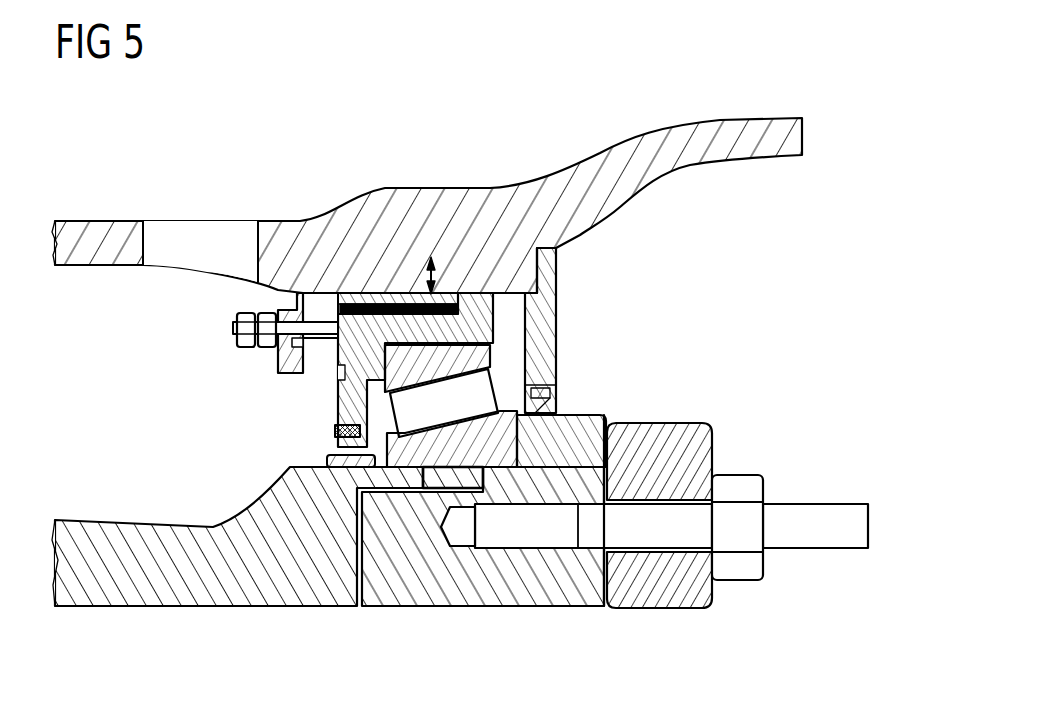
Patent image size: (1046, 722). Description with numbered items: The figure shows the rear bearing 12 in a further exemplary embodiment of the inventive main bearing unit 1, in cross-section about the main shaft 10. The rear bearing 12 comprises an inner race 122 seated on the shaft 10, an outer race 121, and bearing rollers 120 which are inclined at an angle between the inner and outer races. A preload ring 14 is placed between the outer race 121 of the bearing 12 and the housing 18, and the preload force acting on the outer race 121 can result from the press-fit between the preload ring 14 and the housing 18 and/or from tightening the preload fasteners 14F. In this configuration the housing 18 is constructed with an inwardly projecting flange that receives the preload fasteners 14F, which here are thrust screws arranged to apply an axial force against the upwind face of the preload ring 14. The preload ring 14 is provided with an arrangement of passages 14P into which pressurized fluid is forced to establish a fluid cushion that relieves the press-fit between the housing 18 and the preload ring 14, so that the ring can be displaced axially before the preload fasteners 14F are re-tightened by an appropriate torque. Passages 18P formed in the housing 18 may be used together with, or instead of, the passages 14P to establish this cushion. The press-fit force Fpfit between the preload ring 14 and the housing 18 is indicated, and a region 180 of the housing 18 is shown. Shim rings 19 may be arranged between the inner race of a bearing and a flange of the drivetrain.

The main bearing unit 1 is at (180, 132).
The main shaft 10 is at (158, 530).
The rear bearing 12 is at (506, 382).
The bearing rollers 120 is at (417, 414).
The outer race 121 is at (478, 352).
The inner race 122 is at (362, 450).
The preload ring 14 is at (488, 323).
The preload fasteners 14F is at (238, 328).
The passages 14P is at (412, 293).
The housing 18 is at (502, 197).
The cut-out section 180 is at (184, 234).
The passages 18P is at (278, 363).
The shim rings 19 is at (603, 414).
The press-fit force Fpfit is at (438, 288).